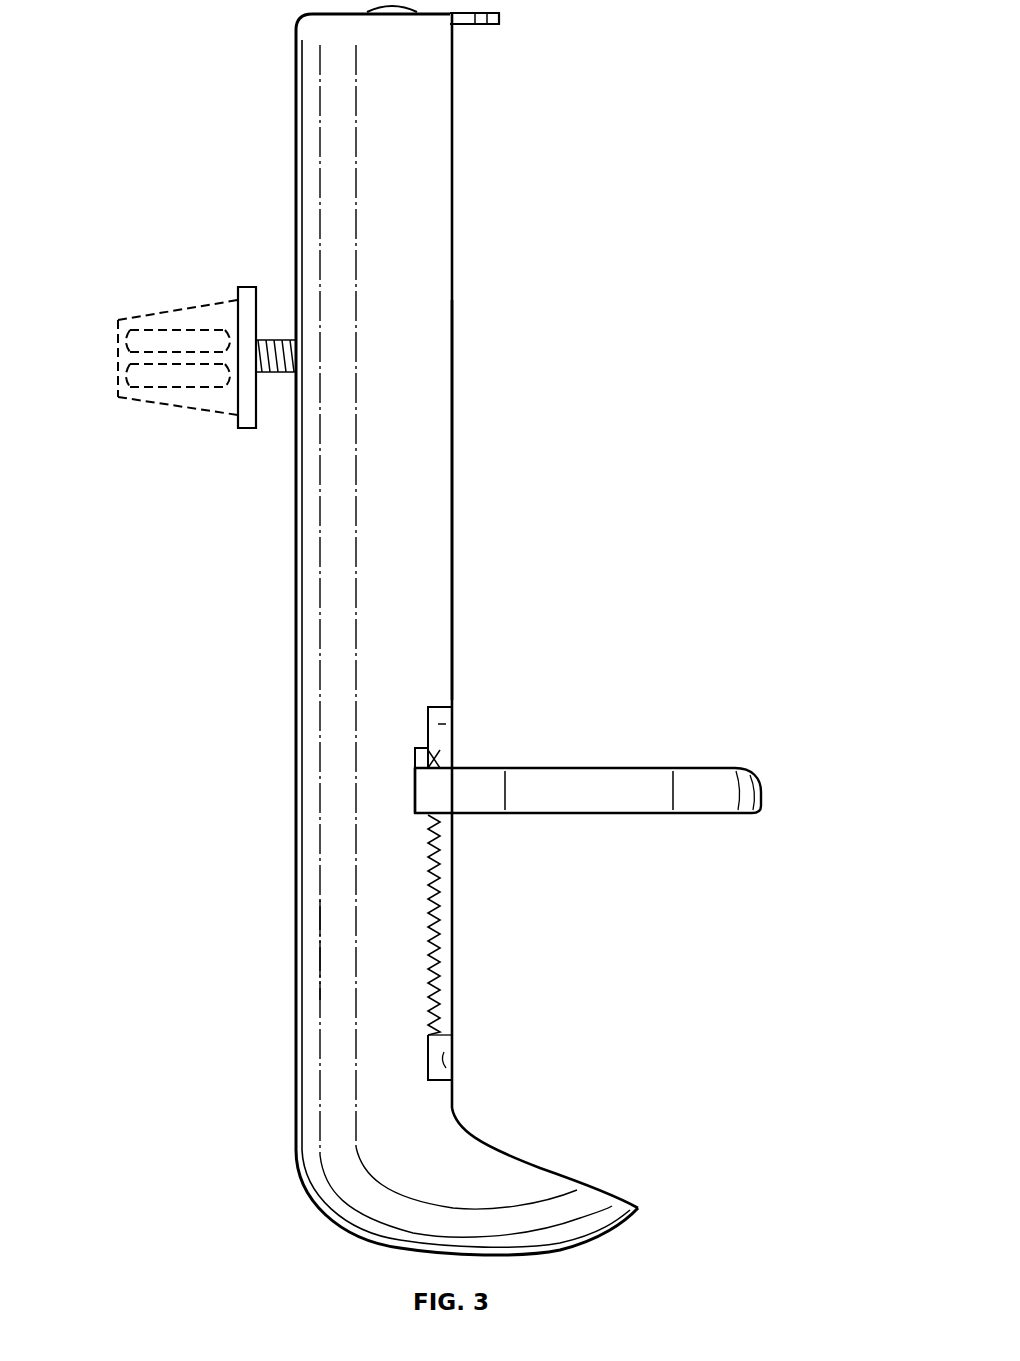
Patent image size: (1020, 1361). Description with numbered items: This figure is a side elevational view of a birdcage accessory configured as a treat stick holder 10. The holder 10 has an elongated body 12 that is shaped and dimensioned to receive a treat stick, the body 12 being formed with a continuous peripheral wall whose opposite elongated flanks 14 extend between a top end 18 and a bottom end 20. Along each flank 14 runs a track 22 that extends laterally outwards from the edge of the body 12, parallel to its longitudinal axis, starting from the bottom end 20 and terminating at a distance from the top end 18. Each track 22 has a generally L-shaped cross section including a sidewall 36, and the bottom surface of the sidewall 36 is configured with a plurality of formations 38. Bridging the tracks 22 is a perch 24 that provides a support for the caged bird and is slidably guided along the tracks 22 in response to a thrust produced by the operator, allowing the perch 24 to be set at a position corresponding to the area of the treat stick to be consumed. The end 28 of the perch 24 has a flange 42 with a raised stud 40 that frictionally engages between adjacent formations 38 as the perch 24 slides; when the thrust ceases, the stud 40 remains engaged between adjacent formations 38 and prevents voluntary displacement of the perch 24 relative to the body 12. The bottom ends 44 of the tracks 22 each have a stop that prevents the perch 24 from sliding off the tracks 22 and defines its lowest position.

The treat stick holder 10 is at (262, 742).
The elongated body 12 is at (450, 463).
The flanks 14 is at (455, 576).
The top end 18 is at (432, 14).
The bottom end 20 is at (403, 1170).
The tracks 22 is at (454, 985).
The perch 24 is at (657, 795).
The end of perch 28 is at (404, 790).
The sidewall 36 is at (446, 905).
The formations 38 is at (428, 967).
The raised stud 40 is at (438, 752).
The flange 42 is at (418, 760).
The bottom ends of tracks 44 is at (440, 1052).